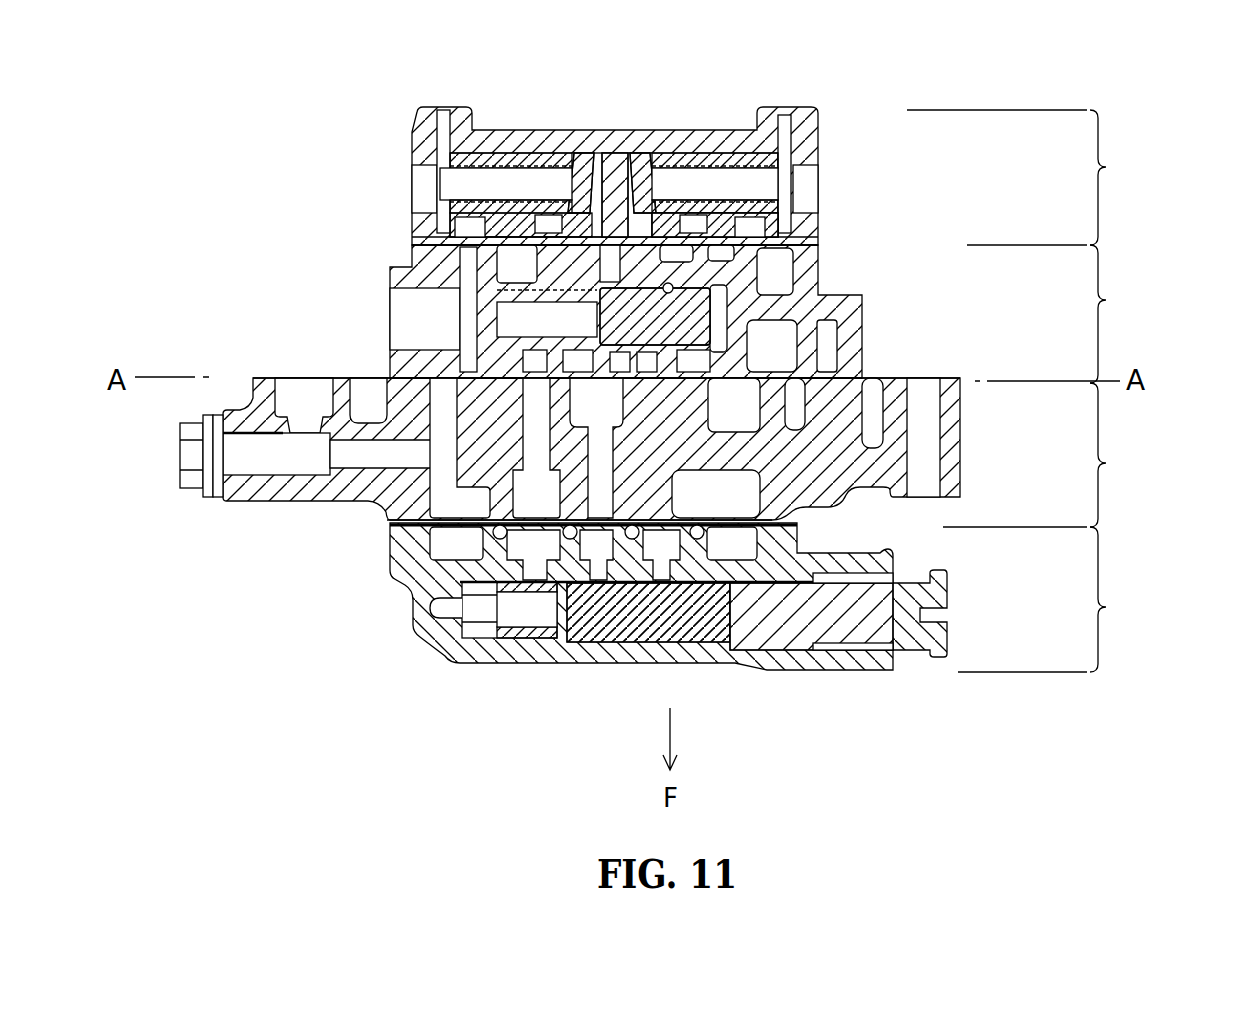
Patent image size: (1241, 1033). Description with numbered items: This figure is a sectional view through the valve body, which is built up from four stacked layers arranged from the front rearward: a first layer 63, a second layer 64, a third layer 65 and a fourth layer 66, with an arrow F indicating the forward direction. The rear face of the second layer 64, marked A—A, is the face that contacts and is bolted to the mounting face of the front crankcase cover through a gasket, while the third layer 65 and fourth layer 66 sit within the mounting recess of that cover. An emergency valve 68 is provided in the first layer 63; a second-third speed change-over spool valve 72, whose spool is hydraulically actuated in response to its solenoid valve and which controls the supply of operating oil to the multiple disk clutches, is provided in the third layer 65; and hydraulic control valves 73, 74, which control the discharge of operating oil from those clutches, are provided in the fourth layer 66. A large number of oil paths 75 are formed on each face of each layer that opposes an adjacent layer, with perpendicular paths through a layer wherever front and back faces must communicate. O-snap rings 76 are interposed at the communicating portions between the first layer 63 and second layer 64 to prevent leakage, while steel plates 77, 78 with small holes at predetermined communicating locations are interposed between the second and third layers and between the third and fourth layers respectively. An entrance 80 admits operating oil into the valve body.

The first layer 63 is at (806, 644).
The second layer 64 is at (695, 407).
The third layer 65 is at (737, 295).
The fourth layer 66 is at (736, 149).
The emergency valve 68 is at (708, 617).
The second-third speed change-over spool valve 72 is at (733, 282).
The hydraulic control valve 73 is at (585, 140).
The hydraulic control valve 74 is at (653, 140).
The oil paths 75 is at (740, 228).
The O-snap rings 76 is at (630, 540).
The plate 77 is at (378, 368).
The plate 78 is at (405, 242).
The entrance 80 is at (307, 398).